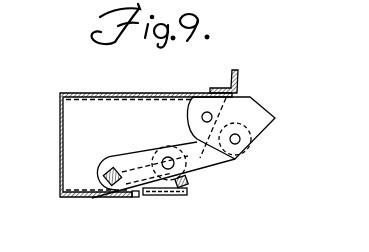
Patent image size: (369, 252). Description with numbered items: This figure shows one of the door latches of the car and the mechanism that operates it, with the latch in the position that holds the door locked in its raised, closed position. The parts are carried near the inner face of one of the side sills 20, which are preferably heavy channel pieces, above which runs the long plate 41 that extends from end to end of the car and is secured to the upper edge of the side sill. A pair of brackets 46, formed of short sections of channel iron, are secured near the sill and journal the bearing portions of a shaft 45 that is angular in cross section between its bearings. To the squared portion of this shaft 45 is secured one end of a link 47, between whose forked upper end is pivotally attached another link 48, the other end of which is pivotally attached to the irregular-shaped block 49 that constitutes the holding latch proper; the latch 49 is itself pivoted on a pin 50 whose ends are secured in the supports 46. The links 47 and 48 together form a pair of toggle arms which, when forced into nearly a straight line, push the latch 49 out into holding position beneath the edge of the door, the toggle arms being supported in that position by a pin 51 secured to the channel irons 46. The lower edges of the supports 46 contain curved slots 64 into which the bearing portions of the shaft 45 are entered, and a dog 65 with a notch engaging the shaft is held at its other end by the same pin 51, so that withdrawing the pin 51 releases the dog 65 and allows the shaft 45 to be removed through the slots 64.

The side sill 20 is at (60, 146).
The long plate 41 is at (183, 92).
The shaft 45 is at (111, 181).
The bracket 46 is at (135, 103).
The link 47 is at (137, 152).
The link 48 is at (215, 166).
The block 49 is at (252, 114).
The pin 50 is at (202, 117).
The pin 51 is at (186, 187).
The curved slot 64 is at (138, 198).
The dog 65 is at (145, 196).